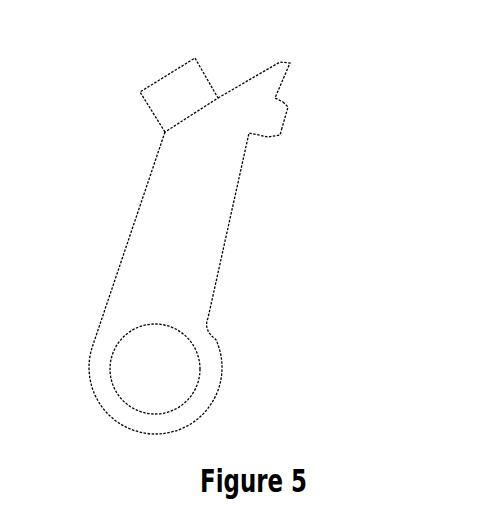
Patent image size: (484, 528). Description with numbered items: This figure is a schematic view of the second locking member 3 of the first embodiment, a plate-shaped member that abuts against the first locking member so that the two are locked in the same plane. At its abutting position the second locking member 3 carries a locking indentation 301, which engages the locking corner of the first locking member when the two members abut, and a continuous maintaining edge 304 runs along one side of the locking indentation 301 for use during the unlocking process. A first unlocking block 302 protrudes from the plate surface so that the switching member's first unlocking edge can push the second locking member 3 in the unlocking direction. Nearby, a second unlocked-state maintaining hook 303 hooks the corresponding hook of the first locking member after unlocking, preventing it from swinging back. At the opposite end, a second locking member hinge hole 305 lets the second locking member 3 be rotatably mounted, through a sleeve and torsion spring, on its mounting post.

The second locking member 3 is at (155, 240).
The locking indentation 301 is at (283, 100).
The first unlocking block 302 is at (195, 87).
The second unlocked-state maintaining hook 303 is at (270, 140).
The continuous maintaining edge 304 is at (286, 125).
The second locking member hinge hole 305 is at (145, 370).